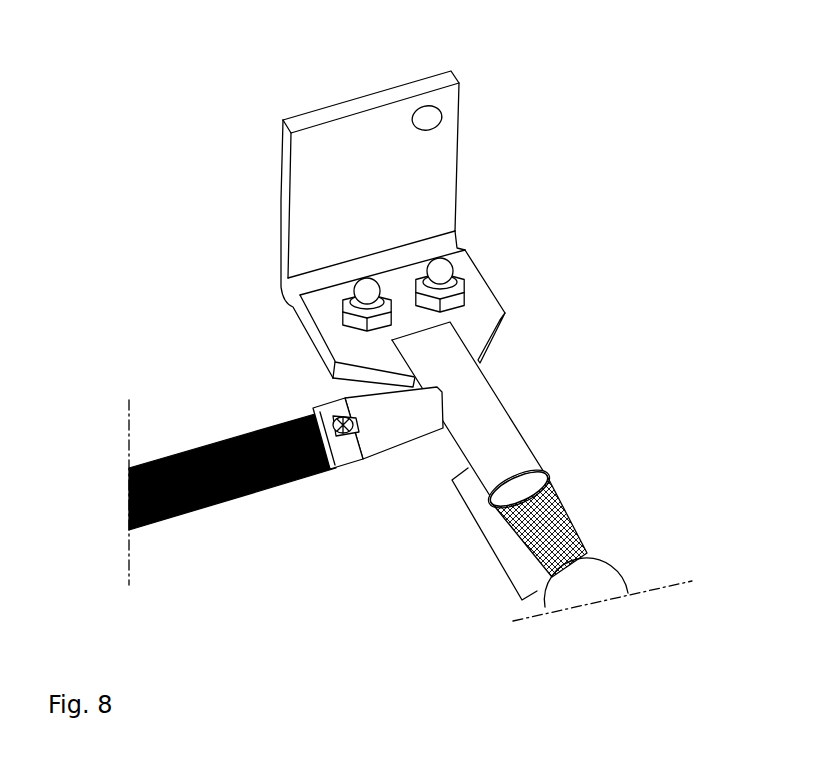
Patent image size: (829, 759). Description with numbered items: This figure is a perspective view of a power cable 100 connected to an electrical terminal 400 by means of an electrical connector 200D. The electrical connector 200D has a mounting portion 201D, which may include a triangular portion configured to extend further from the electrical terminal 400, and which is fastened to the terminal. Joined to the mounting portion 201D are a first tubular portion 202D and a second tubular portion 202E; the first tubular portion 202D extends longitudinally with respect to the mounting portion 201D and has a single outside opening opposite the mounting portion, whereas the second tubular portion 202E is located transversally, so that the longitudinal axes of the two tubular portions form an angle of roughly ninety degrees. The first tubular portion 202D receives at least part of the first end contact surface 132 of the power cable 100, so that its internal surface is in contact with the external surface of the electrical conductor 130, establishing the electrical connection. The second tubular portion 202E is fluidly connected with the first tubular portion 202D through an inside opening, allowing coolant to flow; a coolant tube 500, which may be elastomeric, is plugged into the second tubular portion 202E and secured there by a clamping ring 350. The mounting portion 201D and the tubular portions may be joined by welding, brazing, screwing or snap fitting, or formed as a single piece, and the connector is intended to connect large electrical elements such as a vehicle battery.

The electrical terminal 400 is at (368, 65).
The coolant tube 500 is at (224, 415).
The clamping ring 350 is at (320, 399).
The electrical connector 200D is at (495, 339).
The mounting portion 201D is at (470, 284).
The first tubular portion 202D is at (496, 440).
The second tubular portion 202E is at (403, 426).
The electrical conductor 130 is at (555, 518).
The first end contact surface 132 is at (480, 540).
The power cable 100 is at (607, 572).